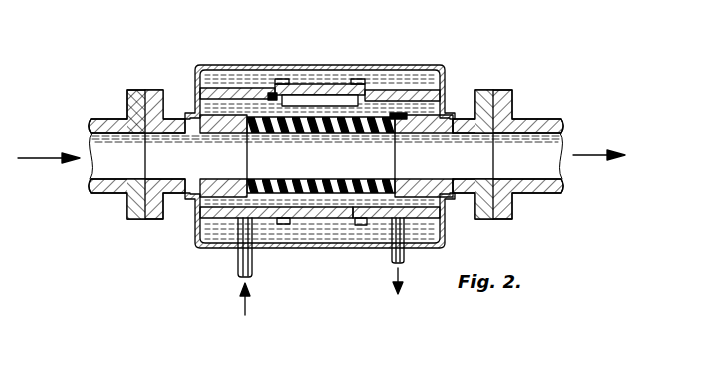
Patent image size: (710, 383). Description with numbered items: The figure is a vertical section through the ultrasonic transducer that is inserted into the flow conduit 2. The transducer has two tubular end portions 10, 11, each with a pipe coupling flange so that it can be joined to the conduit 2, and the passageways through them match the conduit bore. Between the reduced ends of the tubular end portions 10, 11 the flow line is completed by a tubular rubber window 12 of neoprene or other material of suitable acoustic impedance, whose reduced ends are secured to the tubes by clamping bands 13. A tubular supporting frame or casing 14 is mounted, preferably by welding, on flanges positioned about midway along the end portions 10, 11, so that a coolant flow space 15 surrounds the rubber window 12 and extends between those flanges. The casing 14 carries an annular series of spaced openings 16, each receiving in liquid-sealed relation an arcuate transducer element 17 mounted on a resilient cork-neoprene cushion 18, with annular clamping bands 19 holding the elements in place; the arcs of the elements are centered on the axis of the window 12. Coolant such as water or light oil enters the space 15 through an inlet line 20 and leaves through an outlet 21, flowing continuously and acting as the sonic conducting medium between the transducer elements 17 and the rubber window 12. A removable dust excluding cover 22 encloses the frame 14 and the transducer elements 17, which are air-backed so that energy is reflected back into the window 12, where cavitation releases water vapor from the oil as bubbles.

The conduit 2 is at (108, 119).
The tubular end portion 10 is at (173, 134).
The tubular end portion 11 is at (480, 133).
The rubber window 12 is at (332, 136).
The clamping bands 13 is at (237, 117).
The tubular supporting frame or casing 14 is at (233, 218).
The coolant flow space 15 is at (351, 220).
The openings 16 is at (338, 98).
The transducer elements 17 is at (323, 90).
The resilient cushions 18 is at (274, 95).
The annular clamping bands 19 is at (287, 79).
The inlet line 20 is at (254, 272).
The outlet 21 is at (406, 262).
The removable dust excluding cover 22 is at (228, 65).